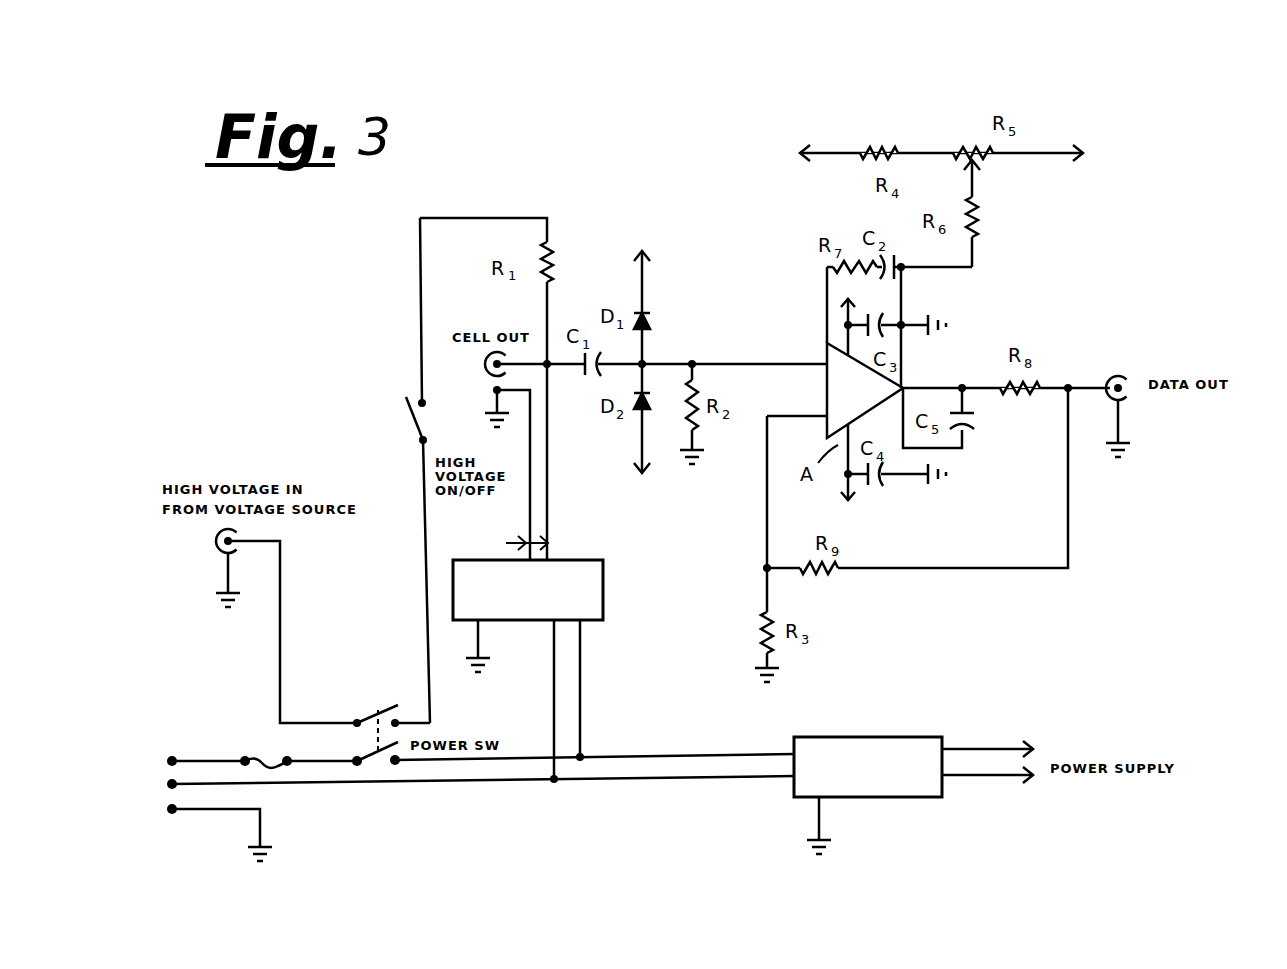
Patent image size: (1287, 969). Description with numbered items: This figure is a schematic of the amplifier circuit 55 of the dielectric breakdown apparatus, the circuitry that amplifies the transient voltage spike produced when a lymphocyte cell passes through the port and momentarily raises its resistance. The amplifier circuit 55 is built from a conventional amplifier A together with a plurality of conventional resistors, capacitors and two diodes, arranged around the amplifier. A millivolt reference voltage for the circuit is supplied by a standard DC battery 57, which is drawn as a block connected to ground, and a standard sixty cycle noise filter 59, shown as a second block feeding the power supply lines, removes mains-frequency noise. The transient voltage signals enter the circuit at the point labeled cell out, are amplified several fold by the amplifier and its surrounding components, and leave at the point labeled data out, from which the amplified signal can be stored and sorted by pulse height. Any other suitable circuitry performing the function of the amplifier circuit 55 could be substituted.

The amplifier circuit 55 is at (393, 355).
The DC battery 57 is at (510, 622).
The 60 cycle noise filter 59 is at (842, 736).